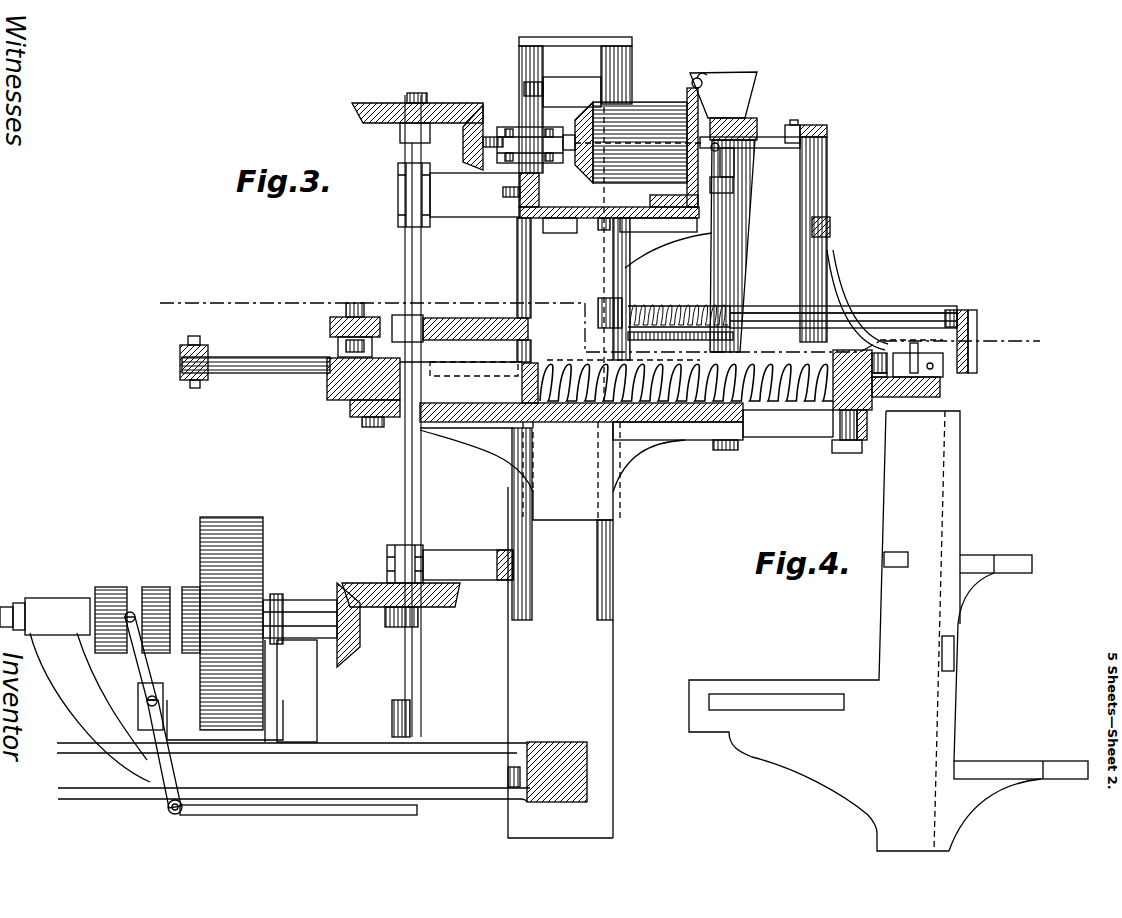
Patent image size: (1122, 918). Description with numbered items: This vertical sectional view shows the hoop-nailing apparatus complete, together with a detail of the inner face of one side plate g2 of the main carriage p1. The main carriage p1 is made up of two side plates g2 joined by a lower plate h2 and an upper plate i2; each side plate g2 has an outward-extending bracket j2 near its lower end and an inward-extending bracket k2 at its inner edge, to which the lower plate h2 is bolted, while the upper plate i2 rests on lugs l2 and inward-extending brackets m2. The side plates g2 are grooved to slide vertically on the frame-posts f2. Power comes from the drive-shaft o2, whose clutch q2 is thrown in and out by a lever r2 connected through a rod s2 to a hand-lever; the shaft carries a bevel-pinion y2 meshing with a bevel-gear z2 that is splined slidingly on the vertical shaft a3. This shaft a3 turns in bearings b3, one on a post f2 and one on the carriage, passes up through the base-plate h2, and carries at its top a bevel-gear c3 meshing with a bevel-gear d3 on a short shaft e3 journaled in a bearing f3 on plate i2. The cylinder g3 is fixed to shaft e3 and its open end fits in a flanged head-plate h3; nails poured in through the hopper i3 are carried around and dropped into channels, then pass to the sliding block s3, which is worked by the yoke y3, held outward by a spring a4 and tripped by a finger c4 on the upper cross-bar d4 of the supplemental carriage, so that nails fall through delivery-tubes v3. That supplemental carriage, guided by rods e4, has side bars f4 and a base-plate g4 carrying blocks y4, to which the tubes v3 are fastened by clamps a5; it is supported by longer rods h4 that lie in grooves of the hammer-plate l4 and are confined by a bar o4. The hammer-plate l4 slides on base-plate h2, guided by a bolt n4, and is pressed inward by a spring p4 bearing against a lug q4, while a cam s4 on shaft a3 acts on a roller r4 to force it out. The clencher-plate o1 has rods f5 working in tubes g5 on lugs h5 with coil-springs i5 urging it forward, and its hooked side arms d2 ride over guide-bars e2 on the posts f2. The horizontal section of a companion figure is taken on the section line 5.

In FIG. 3, the bevel-gear c3 is at (372, 110).
In FIG. 3, the bevel-gear d3 is at (478, 107).
In FIG. 3, the short shaft e3 is at (487, 137).
In FIG. 3, the bearing f3 is at (532, 143).
In FIG. 3, the cylinder g3 is at (640, 147).
In FIG. 3, the spring a4 is at (694, 79).
In FIG. 3, the hopper i3 is at (722, 78).
In FIG. 3, the yoke y3 is at (742, 122).
In FIG. 3, the guide-bars e2 is at (733, 280).
In FIG. 3, the rods e4 is at (760, 150).
In FIG. 3, the sliding block s3 is at (735, 185).
In FIG. 3, the flanged head-plate h3 is at (706, 200).
In FIG. 3, the finger c4 is at (797, 126).
In FIG. 3, the upper cross-bar d4 is at (830, 131).
In FIG. 3, the vertical side bars f4 is at (830, 193).
In FIG. 3, the delivery-tubes v3 is at (830, 272).
In FIG. 3, the bearings b3 is at (400, 195).
In FIG. 3, the lugs l2 is at (556, 226).
In FIG. 4, the lugs l2 is at (891, 555).
In FIG. 3, the upper plate i2 is at (603, 222).
In FIG. 3, the inward-extending brackets m2 is at (640, 242).
In FIG. 4, the inward-extending brackets m2 is at (978, 562).
In FIG. 3, the section line 5 is at (596, 321).
In FIG. 3, the roller r4 is at (345, 318).
In FIG. 3, the cam s4 is at (458, 320).
In FIG. 3, the lugs h5 is at (600, 304).
In FIG. 4, the lugs h5 is at (955, 656).
In FIG. 3, the coil-springs i5 is at (650, 302).
In FIG. 3, the open-ended tubes g5 is at (666, 308).
In FIG. 3, the outward-extending rods f5 is at (895, 306).
In FIG. 3, the side arms d2 is at (937, 318).
In FIG. 3, the clencher-plate o1 is at (977, 362).
In FIG. 3, the bar o4 is at (842, 370).
In FIG. 3, the blocks y4 is at (882, 382).
In FIG. 3, the base-plate g4 is at (917, 400).
In FIG. 3, the clamps a5 is at (935, 376).
In FIG. 3, the bolt n4 is at (847, 422).
In FIG. 3, the actuating-spring p4 is at (772, 414).
In FIG. 3, the inward-extending bracket k2 is at (673, 433).
In FIG. 4, the inward-extending bracket k2 is at (999, 770).
In FIG. 3, the main carriage p1 is at (649, 468).
In FIG. 3, the side plates g2 is at (573, 471).
In FIG. 4, the side plates g2 is at (824, 631).
In FIG. 3, the outward-extending bracket j2 is at (488, 440).
In FIG. 4, the outward-extending bracket j2 is at (777, 700).
In FIG. 3, the lower plate h2 is at (555, 423).
In FIG. 3, the lug q4 is at (540, 364).
In FIG. 3, the rods h4 is at (265, 352).
In FIG. 3, the hammer-plate l4 is at (330, 396).
In FIG. 3, the frame-posts f2 is at (580, 568).
In FIG. 3, the vertical shaft a3 is at (418, 673).
In FIG. 3, the bevel-gear z2 is at (360, 583).
In FIG. 3, the bevel-pinion y2 is at (338, 600).
In FIG. 3, the clutch q2 is at (130, 610).
In FIG. 3, the drive-shaft o2 is at (172, 600).
In FIG. 3, the lever r2 is at (180, 790).
In FIG. 3, the rod s2 is at (350, 808).